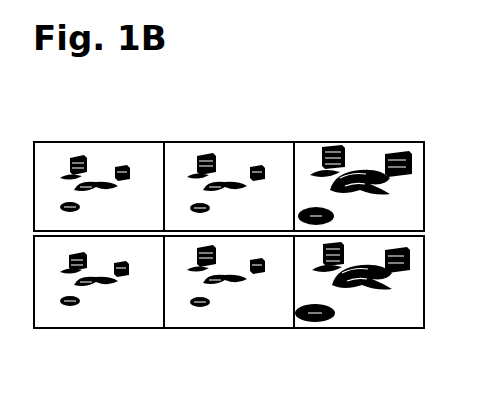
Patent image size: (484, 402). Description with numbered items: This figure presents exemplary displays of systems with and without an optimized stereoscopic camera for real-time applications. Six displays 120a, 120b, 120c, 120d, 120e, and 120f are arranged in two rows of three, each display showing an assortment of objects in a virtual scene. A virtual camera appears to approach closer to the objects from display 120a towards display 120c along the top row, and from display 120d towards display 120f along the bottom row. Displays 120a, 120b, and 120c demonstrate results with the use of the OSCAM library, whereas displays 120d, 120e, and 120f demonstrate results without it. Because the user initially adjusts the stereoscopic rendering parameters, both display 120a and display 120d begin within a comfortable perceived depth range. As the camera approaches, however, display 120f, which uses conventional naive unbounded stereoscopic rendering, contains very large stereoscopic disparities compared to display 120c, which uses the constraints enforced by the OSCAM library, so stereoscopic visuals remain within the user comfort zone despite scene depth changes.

The display 120a is at (96, 141).
The display 120b is at (231, 141).
The display 120c is at (359, 141).
The display 120d is at (96, 328).
The display 120e is at (230, 328).
The display 120f is at (358, 328).